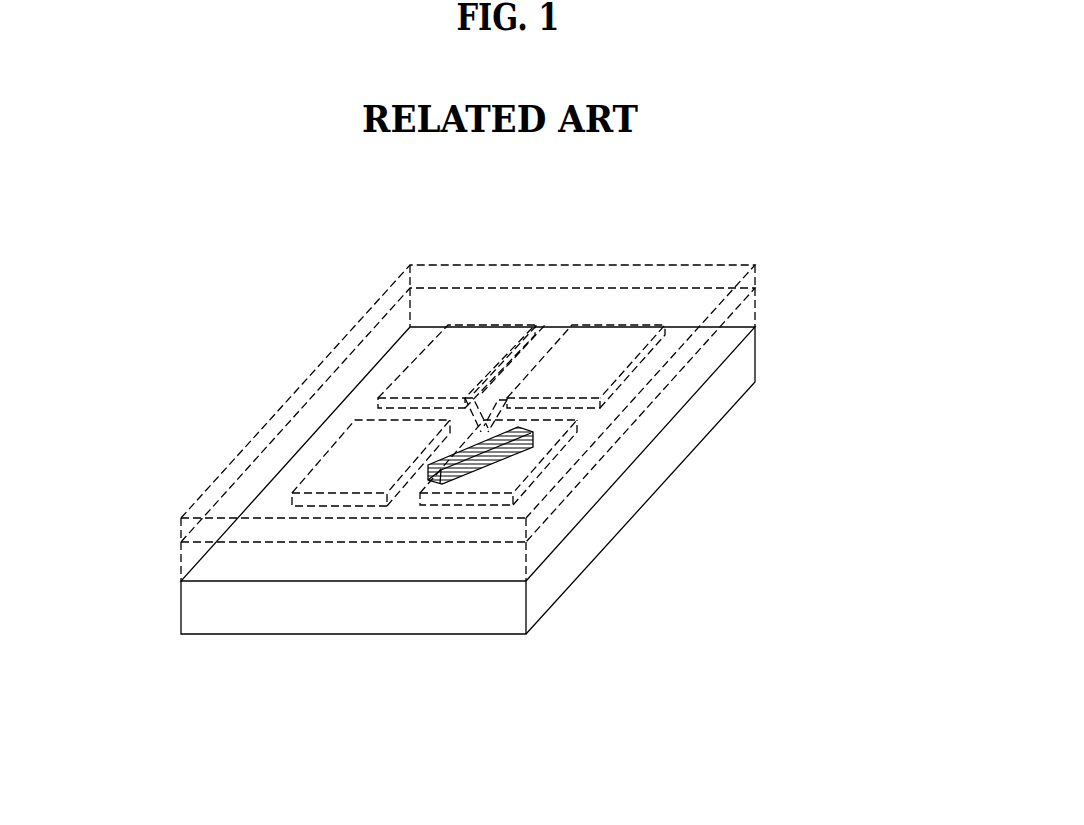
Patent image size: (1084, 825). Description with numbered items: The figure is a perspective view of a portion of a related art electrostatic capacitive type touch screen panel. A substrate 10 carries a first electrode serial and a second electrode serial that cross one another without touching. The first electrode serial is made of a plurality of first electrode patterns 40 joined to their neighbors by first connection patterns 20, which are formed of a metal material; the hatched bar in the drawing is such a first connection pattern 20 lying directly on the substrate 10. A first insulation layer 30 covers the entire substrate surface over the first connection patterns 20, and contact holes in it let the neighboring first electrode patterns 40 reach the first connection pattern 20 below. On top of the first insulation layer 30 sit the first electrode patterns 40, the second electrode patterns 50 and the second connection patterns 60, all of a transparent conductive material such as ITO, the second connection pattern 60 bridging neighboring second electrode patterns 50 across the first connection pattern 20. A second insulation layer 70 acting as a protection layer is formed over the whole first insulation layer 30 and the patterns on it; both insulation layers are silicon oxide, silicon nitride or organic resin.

The substrate 10 is at (752, 368).
The first connection pattern 20 is at (520, 451).
The first insulation layer 30 is at (752, 308).
The first electrode pattern 40 is at (593, 348).
The second electrode pattern 50 is at (440, 358).
The second connection pattern 60 is at (484, 408).
The second insulation layer 70 is at (757, 274).